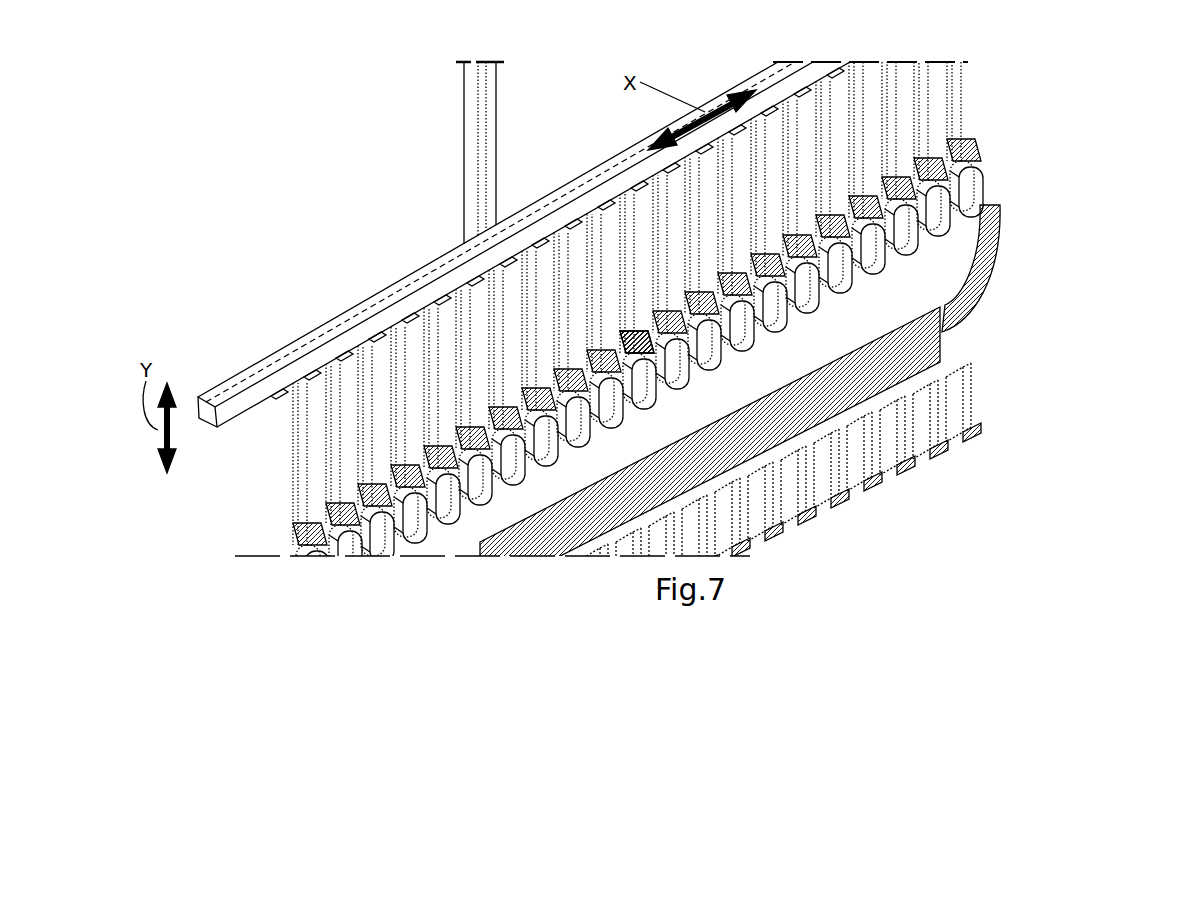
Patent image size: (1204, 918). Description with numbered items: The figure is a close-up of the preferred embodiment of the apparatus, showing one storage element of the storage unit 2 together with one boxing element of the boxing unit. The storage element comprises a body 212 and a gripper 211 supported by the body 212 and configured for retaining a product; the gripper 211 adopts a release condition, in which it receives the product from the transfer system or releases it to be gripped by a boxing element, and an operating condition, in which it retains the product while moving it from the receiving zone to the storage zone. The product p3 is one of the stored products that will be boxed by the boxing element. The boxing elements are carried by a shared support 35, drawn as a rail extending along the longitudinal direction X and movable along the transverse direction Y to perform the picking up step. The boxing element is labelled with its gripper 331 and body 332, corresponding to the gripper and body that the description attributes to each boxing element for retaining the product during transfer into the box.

The shared support 35 is at (313, 326).
The gripper body 331 is at (549, 458).
The suspension rod 332 is at (533, 287).
The storage unit 2 is at (1003, 206).
The gripper 211 is at (640, 350).
The body 212 is at (633, 385).
The product p3 is at (548, 438).